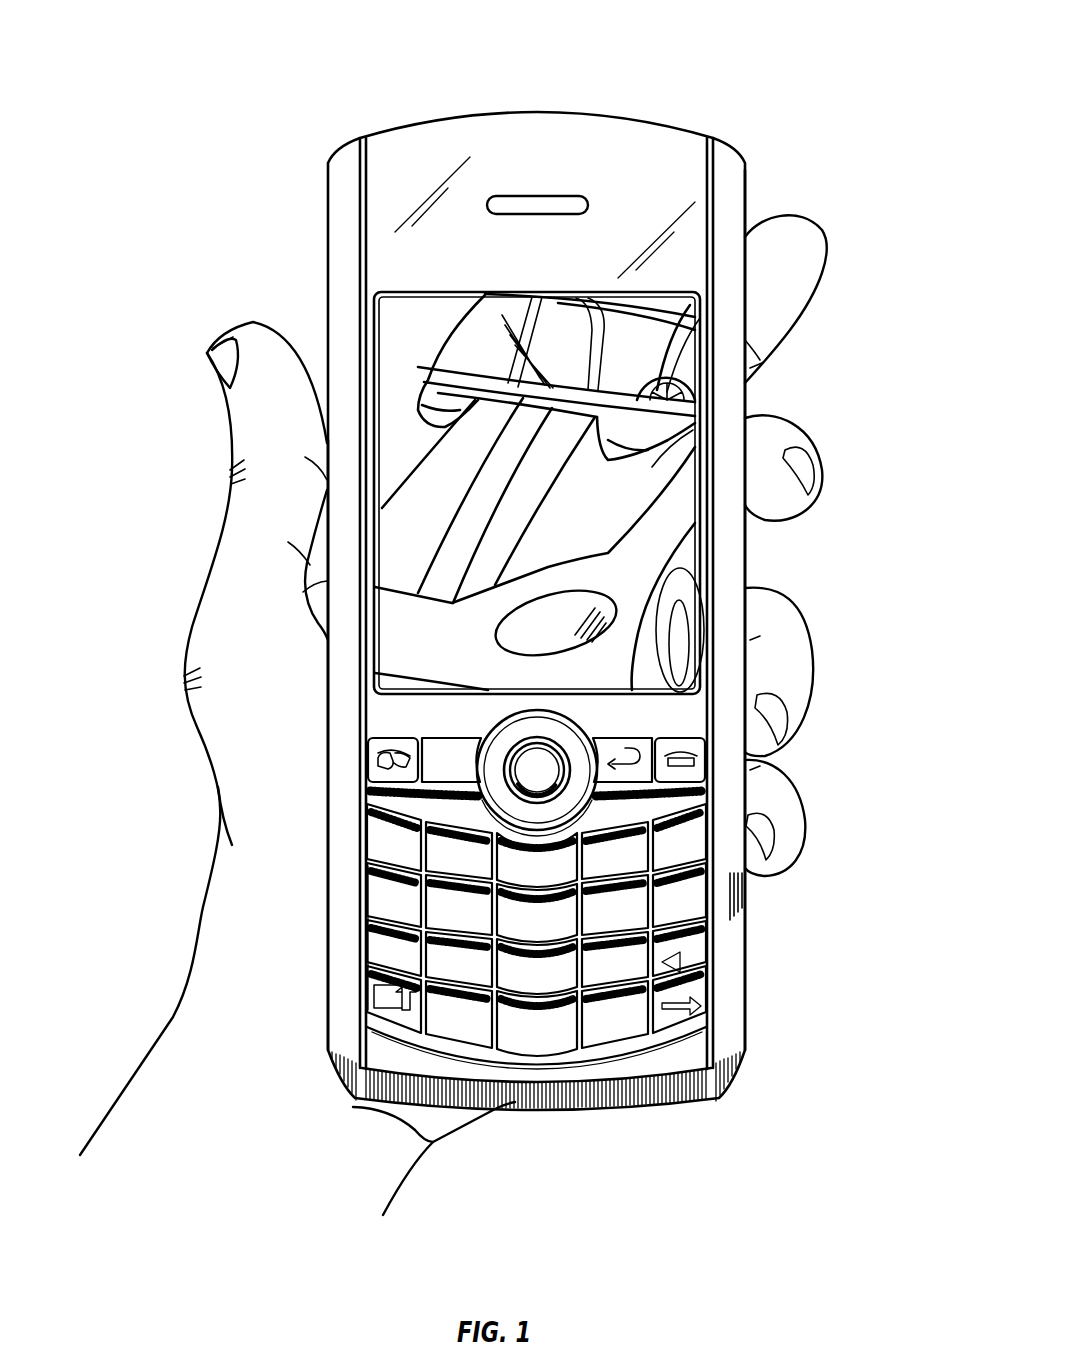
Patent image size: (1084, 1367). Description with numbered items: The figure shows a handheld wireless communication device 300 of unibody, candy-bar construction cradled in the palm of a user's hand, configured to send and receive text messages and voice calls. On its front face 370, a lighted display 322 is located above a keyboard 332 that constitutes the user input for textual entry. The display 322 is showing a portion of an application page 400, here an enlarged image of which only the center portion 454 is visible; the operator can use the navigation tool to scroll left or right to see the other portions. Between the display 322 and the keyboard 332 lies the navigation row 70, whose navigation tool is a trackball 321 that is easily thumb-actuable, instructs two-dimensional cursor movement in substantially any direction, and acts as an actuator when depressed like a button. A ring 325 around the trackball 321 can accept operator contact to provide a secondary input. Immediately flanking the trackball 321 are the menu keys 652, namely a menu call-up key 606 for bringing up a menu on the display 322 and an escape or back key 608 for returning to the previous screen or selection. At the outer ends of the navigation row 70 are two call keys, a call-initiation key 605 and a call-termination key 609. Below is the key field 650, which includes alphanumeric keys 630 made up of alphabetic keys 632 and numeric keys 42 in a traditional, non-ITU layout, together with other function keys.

The handheld wireless communication device 300 is at (691, 51).
The front face 370 is at (729, 207).
The display 322 is at (403, 333).
The application page 400 is at (631, 357).
The center portion 454 is at (653, 467).
The menu call-up key 606 is at (446, 747).
The escape or back key 608 is at (623, 747).
The menu keys 652 is at (611, 734).
The navigation row 70 is at (347, 757).
The call-termination key 609 is at (694, 761).
The call-initiation key 605 is at (391, 761).
The trackball 321 is at (533, 774).
The alphabetic keys 632 is at (363, 885).
The ring 325 is at (576, 799).
The alphanumeric keys 630 is at (630, 950).
The key field 650 is at (373, 1023).
The keyboard 332 is at (550, 1070).
The numeric keys 42 is at (557, 1016).